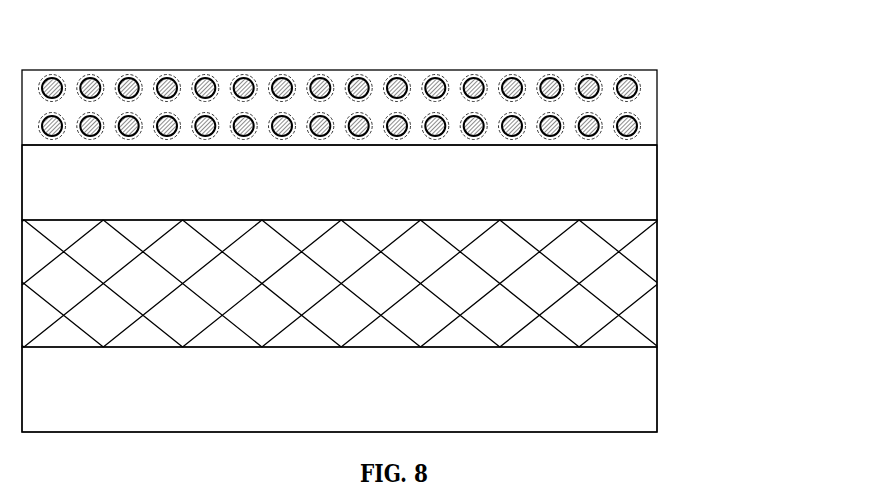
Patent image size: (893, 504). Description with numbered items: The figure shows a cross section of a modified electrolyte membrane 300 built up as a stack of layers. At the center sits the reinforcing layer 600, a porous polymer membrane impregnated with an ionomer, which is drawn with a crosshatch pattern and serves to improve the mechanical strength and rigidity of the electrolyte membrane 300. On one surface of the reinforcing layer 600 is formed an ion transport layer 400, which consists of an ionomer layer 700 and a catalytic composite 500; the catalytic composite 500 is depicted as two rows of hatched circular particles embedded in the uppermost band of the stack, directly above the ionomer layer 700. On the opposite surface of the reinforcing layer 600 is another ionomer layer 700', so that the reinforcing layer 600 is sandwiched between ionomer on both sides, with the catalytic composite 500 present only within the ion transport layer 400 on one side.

The electrolyte membrane 300 is at (248, 40).
The ion transport layer 400 is at (657, 95).
The catalytic composite 500 is at (474, 80).
The ionomer layer 700 is at (396, 182).
The reinforcing layer 600 is at (657, 293).
The another ionomer layer 700' is at (398, 389).